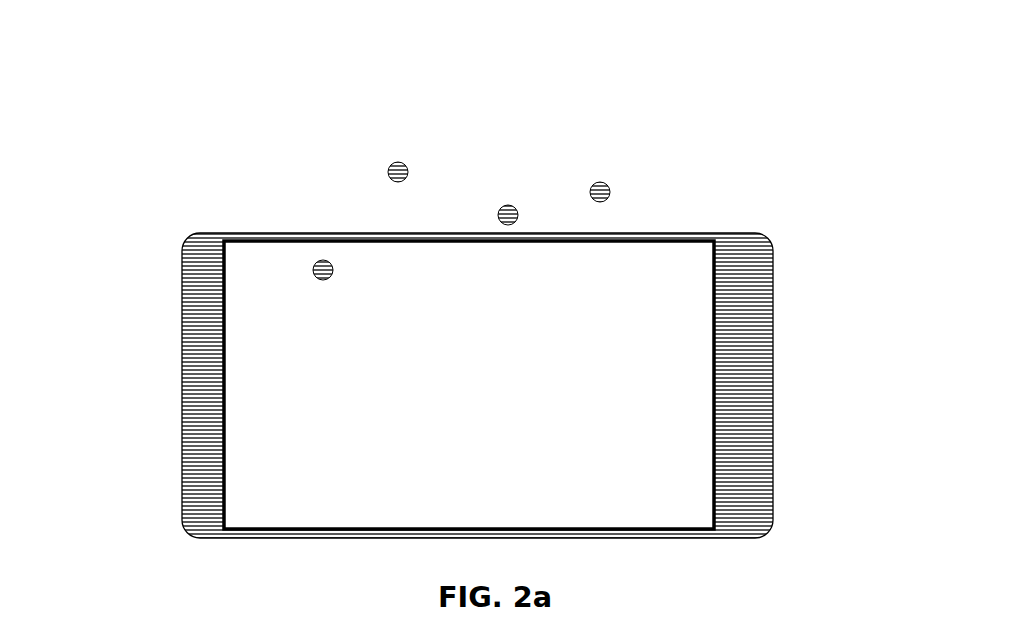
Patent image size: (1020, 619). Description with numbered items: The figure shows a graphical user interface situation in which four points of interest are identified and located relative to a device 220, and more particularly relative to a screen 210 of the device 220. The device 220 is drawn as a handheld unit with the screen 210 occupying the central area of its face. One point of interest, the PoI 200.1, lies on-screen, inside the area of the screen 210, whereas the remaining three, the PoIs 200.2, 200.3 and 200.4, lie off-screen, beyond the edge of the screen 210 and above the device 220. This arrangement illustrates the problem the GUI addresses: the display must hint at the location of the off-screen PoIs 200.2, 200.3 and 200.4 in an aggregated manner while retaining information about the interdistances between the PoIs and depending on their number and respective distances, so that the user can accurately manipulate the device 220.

The PoI 200.1 is at (322, 281).
The PoI 200.2 is at (390, 166).
The PoI 200.3 is at (508, 205).
The PoI 200.4 is at (602, 182).
The screen 210 is at (580, 370).
The device 220 is at (775, 460).